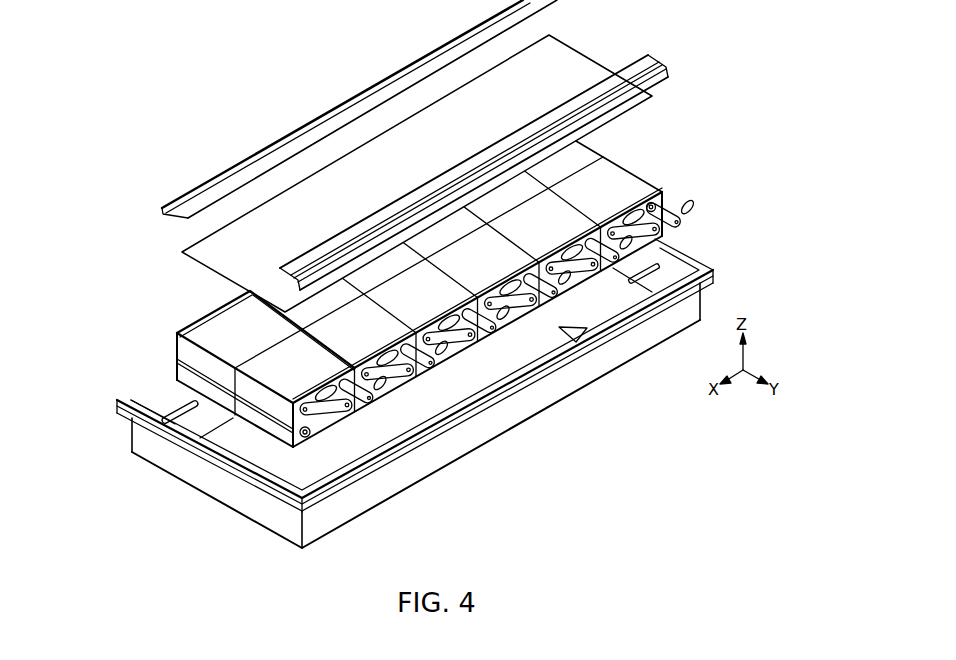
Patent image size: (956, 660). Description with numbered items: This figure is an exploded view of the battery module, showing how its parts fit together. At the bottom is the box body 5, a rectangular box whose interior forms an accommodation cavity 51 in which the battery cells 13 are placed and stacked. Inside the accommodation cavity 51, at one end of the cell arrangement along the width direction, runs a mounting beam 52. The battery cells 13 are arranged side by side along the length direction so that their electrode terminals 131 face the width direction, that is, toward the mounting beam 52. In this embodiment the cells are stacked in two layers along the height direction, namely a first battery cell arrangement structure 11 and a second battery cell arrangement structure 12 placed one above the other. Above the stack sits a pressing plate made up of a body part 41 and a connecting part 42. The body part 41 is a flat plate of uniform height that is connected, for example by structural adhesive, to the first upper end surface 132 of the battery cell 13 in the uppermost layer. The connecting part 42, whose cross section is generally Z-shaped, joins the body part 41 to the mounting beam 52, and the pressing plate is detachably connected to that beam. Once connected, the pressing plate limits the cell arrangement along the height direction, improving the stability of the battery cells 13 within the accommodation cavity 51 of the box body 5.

The box body 5 is at (496, 418).
The accommodation cavity 51 is at (592, 345).
The mounting beam 52 is at (166, 412).
The first battery cell arrangement structure 11 is at (612, 162).
The second battery cell arrangement structure 12 is at (664, 226).
The battery cell 13 is at (182, 353).
The electrode terminal 131 is at (668, 193).
The first upper end surface 132 is at (222, 318).
The body part 41 is at (192, 256).
The connecting part 42 is at (285, 140).